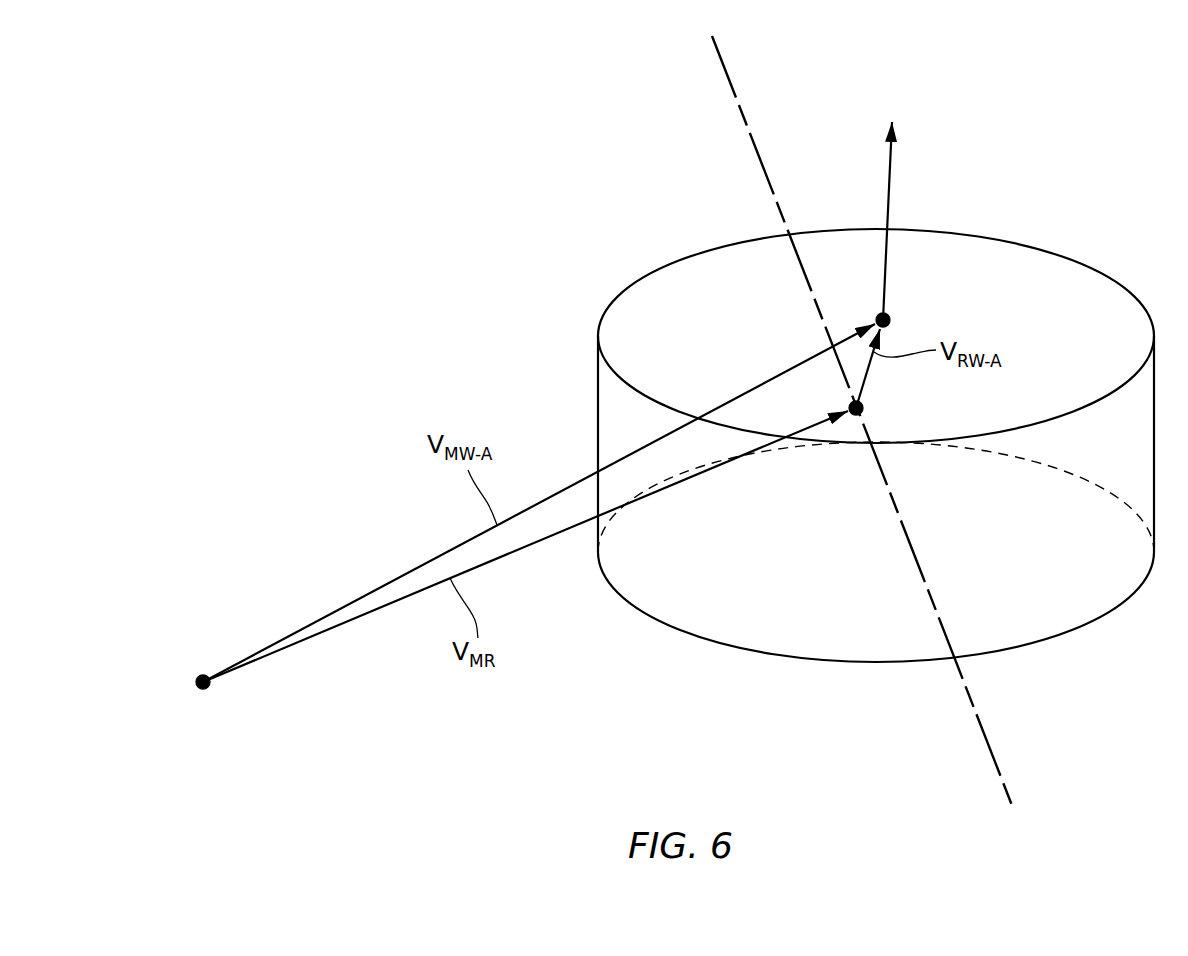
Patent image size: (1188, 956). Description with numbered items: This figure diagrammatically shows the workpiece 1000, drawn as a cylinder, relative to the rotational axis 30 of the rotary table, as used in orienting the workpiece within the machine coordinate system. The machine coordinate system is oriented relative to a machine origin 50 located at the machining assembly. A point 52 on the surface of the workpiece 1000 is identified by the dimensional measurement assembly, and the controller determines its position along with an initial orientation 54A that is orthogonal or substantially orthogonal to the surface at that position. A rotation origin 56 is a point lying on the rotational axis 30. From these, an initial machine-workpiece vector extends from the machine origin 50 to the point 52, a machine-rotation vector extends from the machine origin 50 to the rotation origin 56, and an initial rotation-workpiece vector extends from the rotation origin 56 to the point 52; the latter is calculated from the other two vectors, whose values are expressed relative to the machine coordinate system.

The workpiece 1000 is at (1100, 270).
The rotational axis 30 is at (1008, 788).
The initial orientation 54A is at (892, 157).
The point 52 is at (896, 320).
The rotation origin 56 is at (868, 408).
The machine origin 50 is at (202, 690).